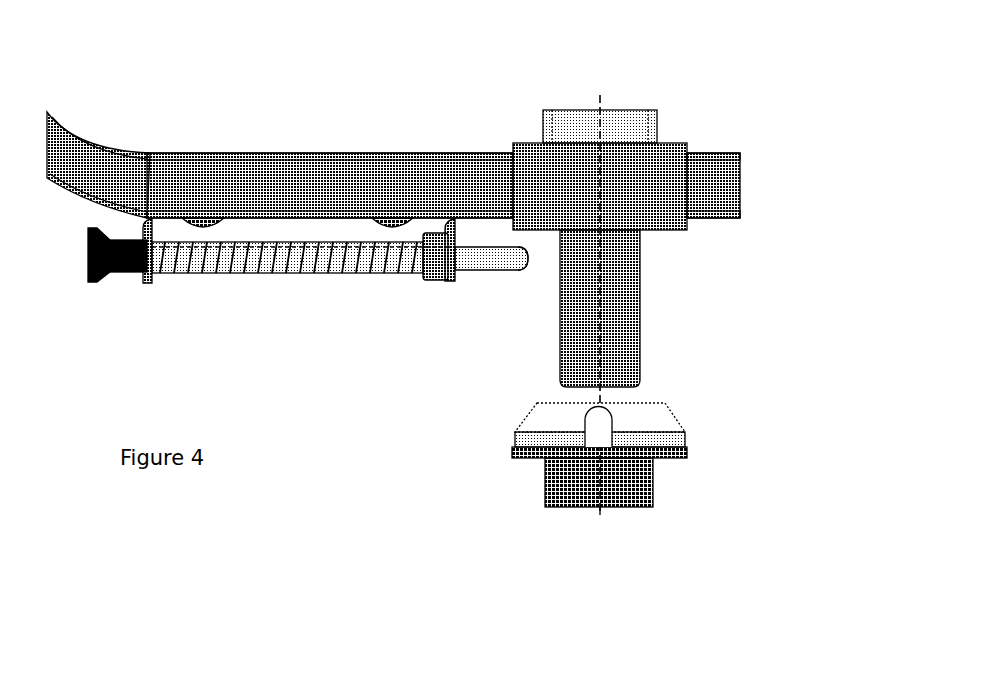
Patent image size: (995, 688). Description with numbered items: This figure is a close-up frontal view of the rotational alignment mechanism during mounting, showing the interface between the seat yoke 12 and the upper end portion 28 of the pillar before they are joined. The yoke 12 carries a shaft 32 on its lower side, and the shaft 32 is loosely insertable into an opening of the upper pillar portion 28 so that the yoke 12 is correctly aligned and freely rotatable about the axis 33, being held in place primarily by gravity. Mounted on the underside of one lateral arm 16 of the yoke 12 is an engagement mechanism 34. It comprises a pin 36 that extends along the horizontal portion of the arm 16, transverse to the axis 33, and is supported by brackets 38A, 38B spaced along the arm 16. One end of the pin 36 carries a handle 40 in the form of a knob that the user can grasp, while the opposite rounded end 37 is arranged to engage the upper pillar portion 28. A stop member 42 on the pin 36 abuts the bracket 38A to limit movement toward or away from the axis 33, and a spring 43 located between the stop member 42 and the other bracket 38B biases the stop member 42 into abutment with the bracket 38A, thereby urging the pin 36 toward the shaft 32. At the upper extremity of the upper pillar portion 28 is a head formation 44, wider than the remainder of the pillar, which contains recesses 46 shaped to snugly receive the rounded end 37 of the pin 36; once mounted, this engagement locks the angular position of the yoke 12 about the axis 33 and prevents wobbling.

The yoke 12 is at (195, 110).
The arm 16 is at (320, 153).
The upper end portion of the pillar 28 is at (563, 468).
The shaft 32 is at (638, 328).
The axis 33 is at (600, 512).
The engagement mechanism 34 is at (221, 298).
The pin 36 is at (488, 270).
The rounded end 37 is at (525, 270).
The bracket 38A is at (450, 281).
The bracket 38B is at (144, 280).
The handle 40 is at (93, 280).
The stop member 42 is at (417, 277).
The spring 43 is at (307, 275).
The head formation 44 is at (537, 423).
The recess 46 is at (612, 423).